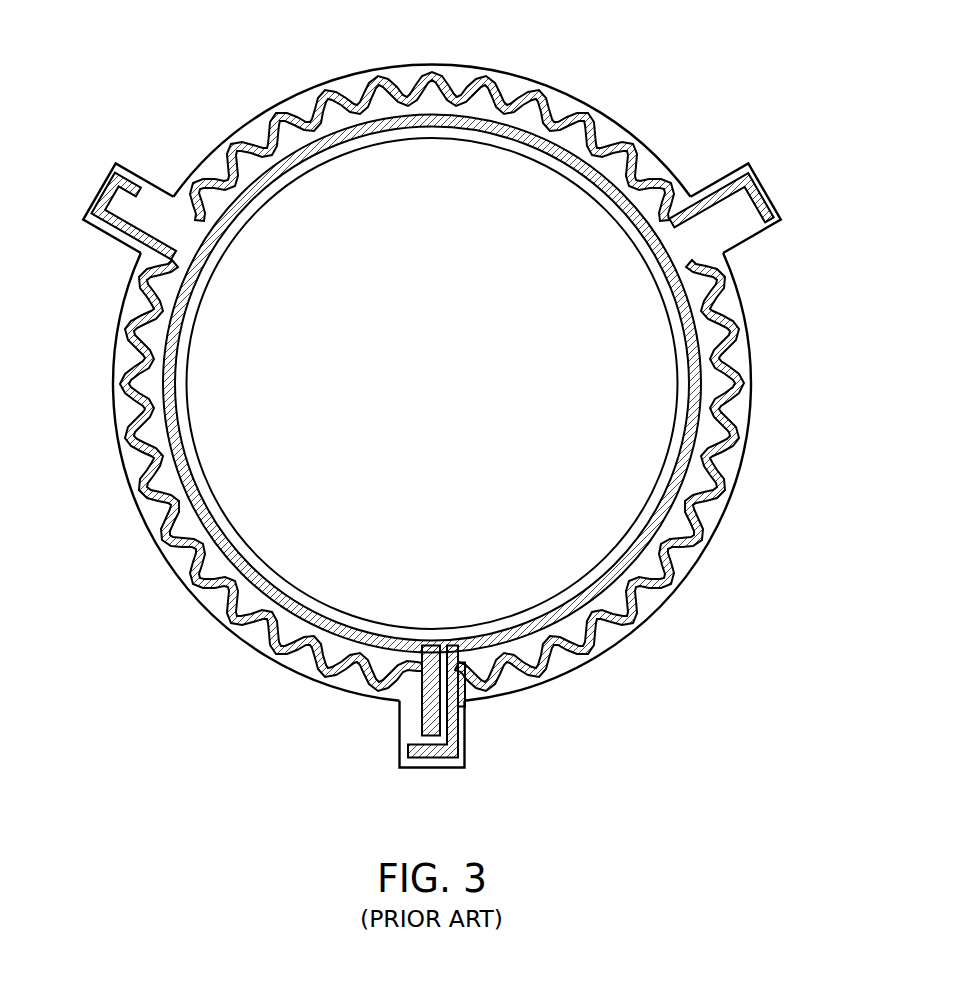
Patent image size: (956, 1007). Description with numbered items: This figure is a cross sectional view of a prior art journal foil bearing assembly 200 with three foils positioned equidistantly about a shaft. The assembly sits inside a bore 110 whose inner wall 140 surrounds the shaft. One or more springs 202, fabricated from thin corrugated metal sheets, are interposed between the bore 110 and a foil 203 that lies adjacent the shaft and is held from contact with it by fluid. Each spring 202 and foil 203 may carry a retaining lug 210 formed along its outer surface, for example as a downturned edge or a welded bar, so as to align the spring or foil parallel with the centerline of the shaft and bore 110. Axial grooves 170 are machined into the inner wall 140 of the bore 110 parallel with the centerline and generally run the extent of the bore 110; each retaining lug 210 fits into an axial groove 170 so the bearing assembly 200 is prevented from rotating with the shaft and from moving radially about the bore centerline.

The journal foil bearing assembly 200 is at (216, 91).
The bore 110 is at (450, 396).
The inner wall 140 is at (396, 73).
The axial groove 170 is at (147, 180).
The spring 202 is at (533, 98).
The foil 203 is at (598, 138).
The retaining lug 210 is at (123, 233).